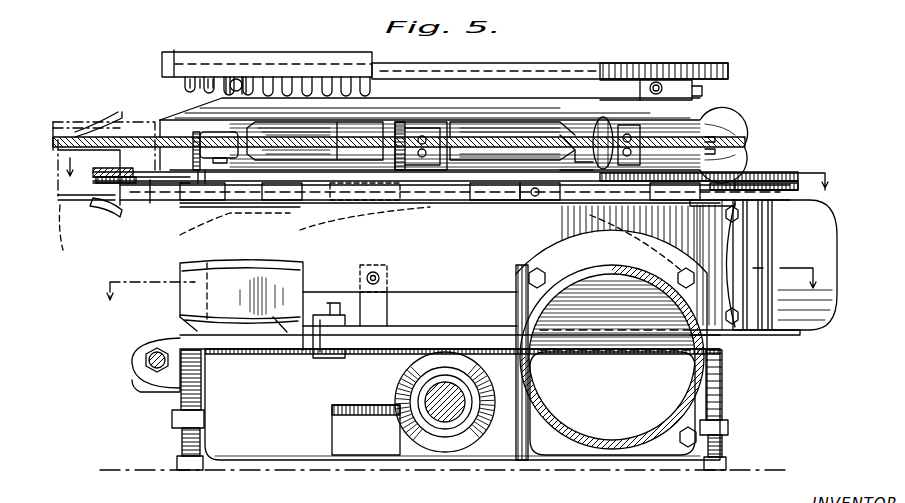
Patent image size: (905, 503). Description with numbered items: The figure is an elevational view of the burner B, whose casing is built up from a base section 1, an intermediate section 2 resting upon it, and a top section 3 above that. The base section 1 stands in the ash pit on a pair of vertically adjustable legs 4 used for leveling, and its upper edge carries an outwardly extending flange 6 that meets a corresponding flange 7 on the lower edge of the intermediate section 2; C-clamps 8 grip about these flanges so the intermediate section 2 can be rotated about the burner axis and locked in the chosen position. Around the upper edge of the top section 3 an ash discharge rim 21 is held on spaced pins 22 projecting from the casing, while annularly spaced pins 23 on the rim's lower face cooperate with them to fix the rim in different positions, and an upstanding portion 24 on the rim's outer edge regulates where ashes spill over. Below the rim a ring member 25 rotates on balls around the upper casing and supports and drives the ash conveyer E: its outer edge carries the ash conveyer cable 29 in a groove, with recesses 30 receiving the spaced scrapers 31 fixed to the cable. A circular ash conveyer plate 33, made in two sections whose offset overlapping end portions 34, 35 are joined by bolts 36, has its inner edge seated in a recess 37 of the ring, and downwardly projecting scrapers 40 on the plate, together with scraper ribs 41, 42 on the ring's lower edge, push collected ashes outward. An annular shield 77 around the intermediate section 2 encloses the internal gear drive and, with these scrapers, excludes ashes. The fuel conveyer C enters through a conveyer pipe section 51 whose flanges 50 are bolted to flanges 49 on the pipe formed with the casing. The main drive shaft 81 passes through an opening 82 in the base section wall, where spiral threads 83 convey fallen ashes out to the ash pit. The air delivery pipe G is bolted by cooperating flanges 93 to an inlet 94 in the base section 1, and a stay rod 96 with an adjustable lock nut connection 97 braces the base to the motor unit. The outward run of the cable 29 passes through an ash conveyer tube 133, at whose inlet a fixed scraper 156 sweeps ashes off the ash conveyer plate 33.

The base section 1 is at (260, 458).
The intermediate section 2 is at (410, 295).
The top section 3 is at (693, 94).
The vertically adjustable legs 4 is at (178, 446).
The outwardly extending flange 6 is at (380, 358).
The flange 7 is at (458, 300).
The C-clamps 8 is at (313, 340).
The ash discharge rim 21 is at (575, 72).
The spaced pins 22 is at (656, 82).
The annularly spaced pins 23 is at (272, 90).
The upstanding portion 24 is at (180, 52).
The ring member 25 is at (700, 135).
The ash conveyer cable 29 is at (136, 140).
The recesses 30 is at (262, 132).
The scrapers 31 is at (405, 125).
The ash conveyer plate 33 is at (118, 170).
The offset overlapping end portion 34 is at (592, 148).
The offset overlapping end portion 35 is at (522, 188).
The bolts 36 is at (535, 198).
The recess 37 is at (205, 182).
The downwardly projecting scrapers 40 is at (110, 192).
The scraper rib 41 is at (172, 195).
The scraper rib 42 is at (335, 188).
The outwardly extending flanges 49 is at (745, 334).
The flanges 50 is at (762, 334).
The conveyer pipe section 51 is at (763, 265).
The annular shield 77 is at (200, 217).
The main drive shaft 81 is at (448, 410).
The opening 82 is at (432, 412).
The spiral threads 83 is at (425, 418).
The cooperating flanges 93 is at (520, 268).
The inlet 94 is at (612, 403).
The stay rod 96 is at (148, 378).
The adjustable lock nut connection 97 is at (142, 360).
The ash conveyer tube 133 is at (74, 235).
The fixed scraper 156 is at (128, 115).
The burner B is at (725, 70).
The fuel conveyer C is at (800, 328).
The ash conveyer E is at (758, 128).
The air delivery pipe G is at (540, 398).